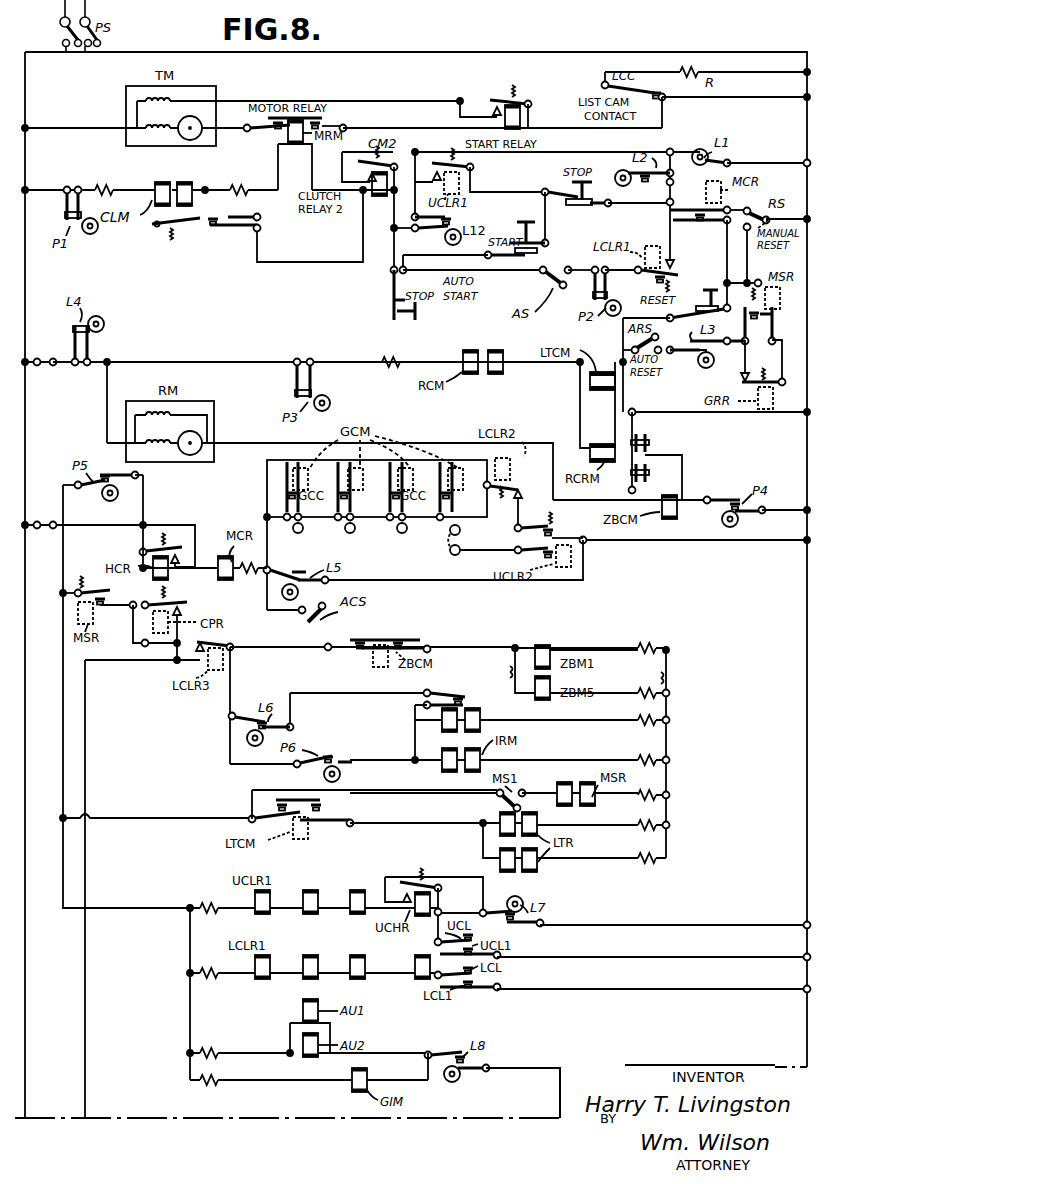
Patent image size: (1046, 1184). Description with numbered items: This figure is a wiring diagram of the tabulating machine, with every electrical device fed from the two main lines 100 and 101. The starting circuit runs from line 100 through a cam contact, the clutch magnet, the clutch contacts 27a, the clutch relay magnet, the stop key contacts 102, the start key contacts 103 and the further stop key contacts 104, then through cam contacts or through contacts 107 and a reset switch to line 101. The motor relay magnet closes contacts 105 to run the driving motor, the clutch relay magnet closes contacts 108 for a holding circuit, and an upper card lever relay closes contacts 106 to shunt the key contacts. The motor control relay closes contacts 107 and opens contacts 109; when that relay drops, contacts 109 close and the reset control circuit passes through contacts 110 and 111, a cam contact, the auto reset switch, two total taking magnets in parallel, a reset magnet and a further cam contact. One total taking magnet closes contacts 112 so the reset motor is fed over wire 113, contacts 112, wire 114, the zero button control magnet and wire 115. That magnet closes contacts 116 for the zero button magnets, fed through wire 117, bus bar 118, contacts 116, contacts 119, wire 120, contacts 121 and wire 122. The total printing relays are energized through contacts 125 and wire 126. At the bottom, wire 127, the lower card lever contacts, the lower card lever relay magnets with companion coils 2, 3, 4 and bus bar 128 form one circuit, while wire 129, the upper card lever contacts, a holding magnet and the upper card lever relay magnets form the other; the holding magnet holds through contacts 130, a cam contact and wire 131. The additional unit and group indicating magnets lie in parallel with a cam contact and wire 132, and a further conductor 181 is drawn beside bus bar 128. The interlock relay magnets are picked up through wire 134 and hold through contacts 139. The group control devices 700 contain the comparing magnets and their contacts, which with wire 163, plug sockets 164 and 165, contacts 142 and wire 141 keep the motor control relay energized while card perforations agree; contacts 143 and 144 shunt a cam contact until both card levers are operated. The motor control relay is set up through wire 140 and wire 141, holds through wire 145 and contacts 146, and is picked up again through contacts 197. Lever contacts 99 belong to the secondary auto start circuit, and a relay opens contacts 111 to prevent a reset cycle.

The main line 100 is at (25, 102).
The main line 101 is at (496, 52).
The stop key contacts 102 is at (392, 273).
The start key contacts 103 is at (540, 253).
The stop key contacts 104 is at (564, 197).
The contacts 105 is at (345, 125).
The contacts 106 is at (426, 152).
The contacts 107 is at (700, 208).
The contacts 108 is at (358, 172).
The contacts 109 is at (700, 218).
The contacts 110 is at (770, 316).
The contacts 111 is at (740, 381).
The contacts 112 is at (648, 446).
The wire 113 is at (712, 412).
The wire 114 is at (684, 466).
The wire 115 is at (432, 443).
The contacts 116 is at (378, 640).
The wire 117 is at (672, 648).
The bus bar 118 is at (668, 738).
The contacts 119 is at (204, 645).
The wire 120 is at (147, 645).
The contacts 121 is at (116, 592).
The wire 122 is at (63, 555).
The contacts 125 is at (288, 804).
The wire 126 is at (122, 818).
The wire 127 is at (630, 994).
The bus bar 128 is at (190, 952).
The wire 129 is at (640, 962).
The contacts 130 is at (388, 876).
The wire 131 is at (664, 930).
The wire 132 is at (560, 1100).
The wire 134 is at (230, 698).
The contacts 139 is at (478, 709).
The wire 140 is at (448, 582).
The wire 141 is at (668, 540).
The contacts 142 is at (512, 544).
The contacts 143 is at (556, 538).
The contacts 144 is at (519, 494).
The wire 145 is at (165, 545).
The contacts 146 is at (182, 547).
The wire 163 is at (270, 553).
The plug socket 164 is at (460, 530).
The socket 165 is at (449, 553).
The conductor 181 is at (83, 1030).
The contacts 197 is at (188, 603).
The control unit 700 is at (298, 460).
The lever contacts 99 is at (676, 272).
The contacts 27a is at (250, 228).
The relay contact 2 is at (311, 926).
The relay contact 3 is at (358, 926).
The relay contact 4 is at (423, 958).